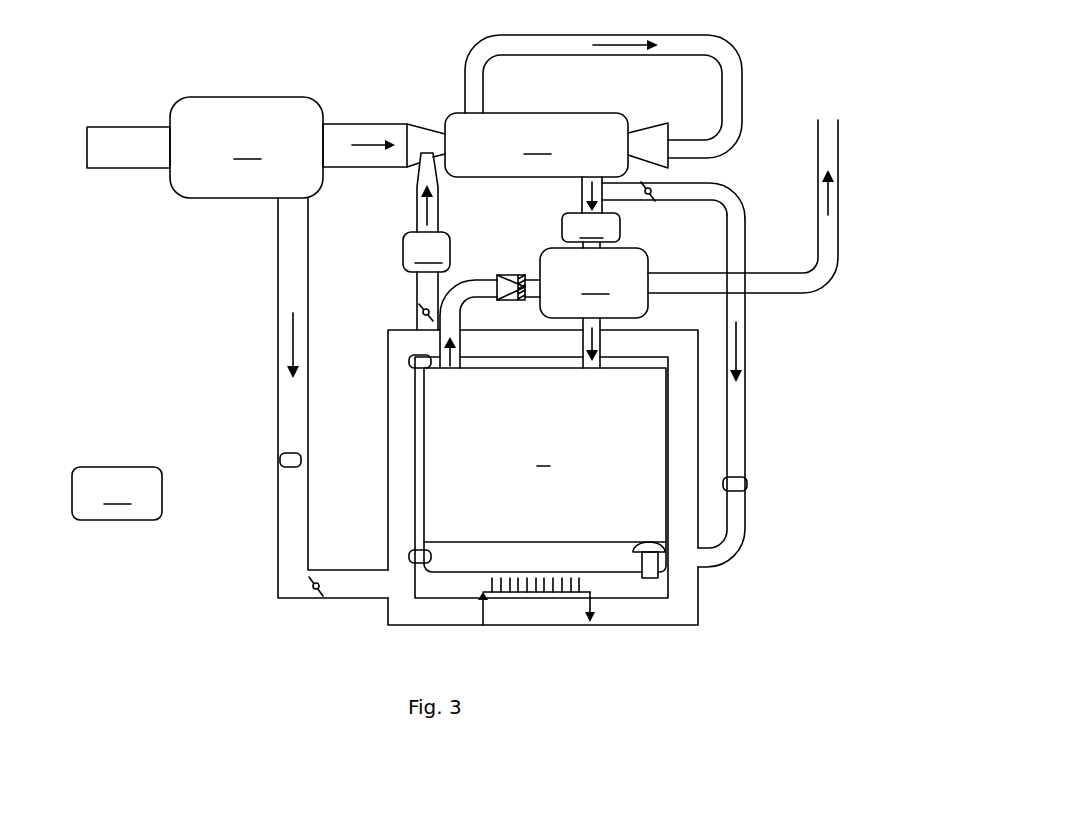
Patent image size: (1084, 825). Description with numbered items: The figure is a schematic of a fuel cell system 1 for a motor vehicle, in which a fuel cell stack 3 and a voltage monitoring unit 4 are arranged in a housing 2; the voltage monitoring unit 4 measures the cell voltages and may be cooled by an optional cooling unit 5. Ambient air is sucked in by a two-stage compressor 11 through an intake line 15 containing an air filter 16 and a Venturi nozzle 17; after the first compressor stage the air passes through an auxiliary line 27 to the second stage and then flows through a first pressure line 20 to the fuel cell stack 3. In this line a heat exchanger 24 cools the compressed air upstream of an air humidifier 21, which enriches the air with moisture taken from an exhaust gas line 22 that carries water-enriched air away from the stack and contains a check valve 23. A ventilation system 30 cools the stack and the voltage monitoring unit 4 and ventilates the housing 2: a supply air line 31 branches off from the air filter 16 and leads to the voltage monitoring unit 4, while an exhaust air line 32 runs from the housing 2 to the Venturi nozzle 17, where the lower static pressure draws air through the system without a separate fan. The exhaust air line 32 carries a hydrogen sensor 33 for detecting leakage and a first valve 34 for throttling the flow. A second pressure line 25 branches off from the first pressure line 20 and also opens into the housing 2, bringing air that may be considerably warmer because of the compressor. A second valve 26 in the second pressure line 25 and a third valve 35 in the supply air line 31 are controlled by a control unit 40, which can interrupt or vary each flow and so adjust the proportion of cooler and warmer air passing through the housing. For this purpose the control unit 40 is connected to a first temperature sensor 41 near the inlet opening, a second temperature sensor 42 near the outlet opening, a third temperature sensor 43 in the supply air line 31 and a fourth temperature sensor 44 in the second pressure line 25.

The fuel cell system 1 is at (870, 65).
The housing 2 is at (699, 428).
The fuel cell stack 3 is at (545, 455).
The voltage monitoring unit 4 is at (655, 600).
The cooling unit 5 is at (516, 608).
The two-stage compressor 11 is at (556, 145).
The intake line 15 is at (130, 127).
The air filter 16 is at (246, 147).
The Venturi nozzle 17 is at (431, 122).
The first pressure line 20 is at (581, 195).
The air humidifier 21 is at (594, 283).
The exhaust gas line 22 is at (467, 298).
The check valve 23 is at (507, 273).
The heat exchanger 24 is at (591, 230).
The second pressure line 25 is at (747, 333).
The second valve 26 is at (663, 212).
The auxiliary line 27 is at (743, 98).
The ventilation system 30 is at (246, 302).
The supply air line 31 is at (278, 375).
The exhaust air line 32 is at (417, 284).
The hydrogen sensor 33 is at (426, 212).
The first valve 34 is at (415, 318).
The third valve 35 is at (298, 585).
The control unit 40 is at (117, 493).
The first temperature sensor 41 is at (407, 565).
The second temperature sensor 42 is at (409, 360).
The third temperature sensor 43 is at (280, 460).
The fourth temperature sensor 44 is at (748, 483).